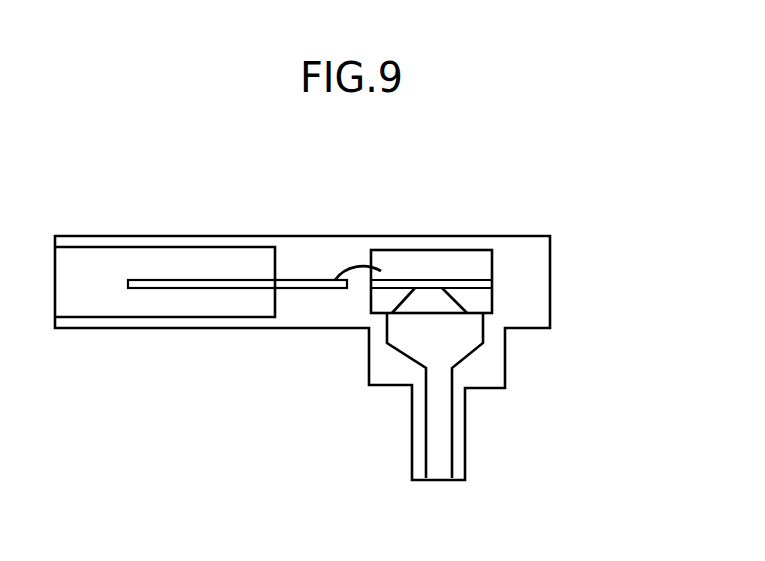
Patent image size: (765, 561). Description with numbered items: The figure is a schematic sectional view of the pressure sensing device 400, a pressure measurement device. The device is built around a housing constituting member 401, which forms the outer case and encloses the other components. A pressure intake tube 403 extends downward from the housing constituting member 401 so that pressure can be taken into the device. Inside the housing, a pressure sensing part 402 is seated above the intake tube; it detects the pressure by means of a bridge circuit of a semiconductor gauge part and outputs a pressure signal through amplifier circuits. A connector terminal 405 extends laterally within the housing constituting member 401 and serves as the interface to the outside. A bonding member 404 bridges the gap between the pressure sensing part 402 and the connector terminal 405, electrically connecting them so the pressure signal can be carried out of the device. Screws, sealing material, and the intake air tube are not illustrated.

The pressure sensing device 400 is at (306, 313).
The housing constituting member 401 is at (527, 297).
The pressure sensing part 402 is at (457, 280).
The pressure intake tube 403 is at (443, 445).
The bonding member 404 is at (353, 265).
The connector terminal 405 is at (305, 281).